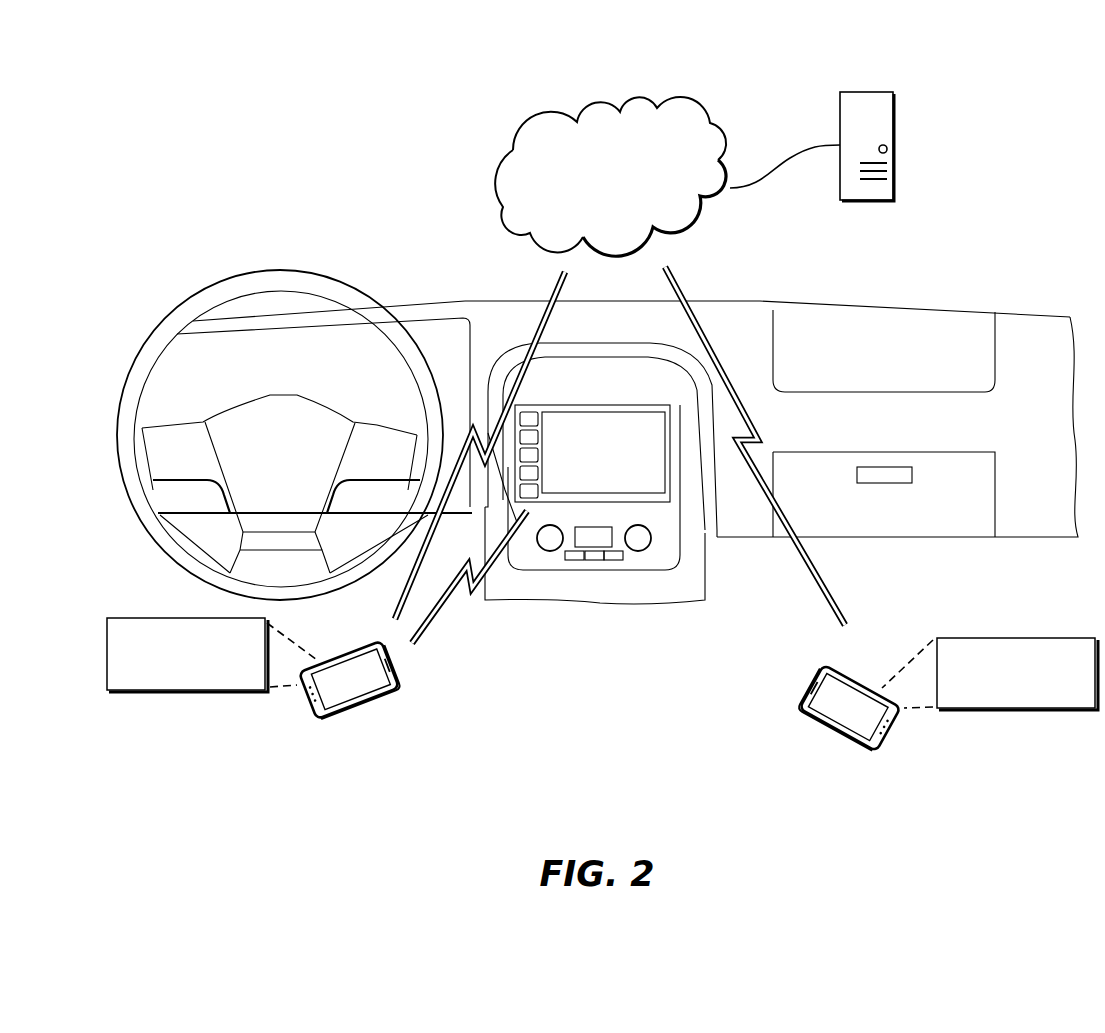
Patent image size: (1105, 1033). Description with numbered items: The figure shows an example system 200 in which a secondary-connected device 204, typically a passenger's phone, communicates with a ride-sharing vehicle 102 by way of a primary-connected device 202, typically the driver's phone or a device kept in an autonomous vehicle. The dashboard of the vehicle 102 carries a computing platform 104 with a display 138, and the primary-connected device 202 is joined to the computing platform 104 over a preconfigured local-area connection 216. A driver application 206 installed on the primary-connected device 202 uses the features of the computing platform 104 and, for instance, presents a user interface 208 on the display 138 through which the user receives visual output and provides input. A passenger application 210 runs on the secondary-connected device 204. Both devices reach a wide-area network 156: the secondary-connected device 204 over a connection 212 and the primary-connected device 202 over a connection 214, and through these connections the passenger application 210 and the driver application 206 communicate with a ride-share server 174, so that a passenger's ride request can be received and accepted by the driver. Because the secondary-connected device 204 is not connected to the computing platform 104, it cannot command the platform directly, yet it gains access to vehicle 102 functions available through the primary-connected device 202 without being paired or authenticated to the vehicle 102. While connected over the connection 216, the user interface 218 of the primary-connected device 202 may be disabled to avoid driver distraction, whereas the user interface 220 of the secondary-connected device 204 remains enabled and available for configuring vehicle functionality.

The system 200 is at (118, 72).
The vehicle 102 is at (1022, 317).
The computing platform 104 is at (617, 411).
The display 138 is at (612, 410).
The user interface 208 is at (583, 460).
The wide-area network 156 is at (601, 206).
The ride-share server 174 is at (856, 270).
The primary-connected device 202 is at (368, 642).
The secondary-connected device 204 is at (838, 668).
The driver application 206 is at (174, 686).
The passenger application 210 is at (1005, 704).
The connection 212 is at (813, 575).
The connection 214 is at (538, 322).
The local-area connection 216 is at (443, 607).
The user interface 218 is at (352, 690).
The user interface 220 is at (837, 710).